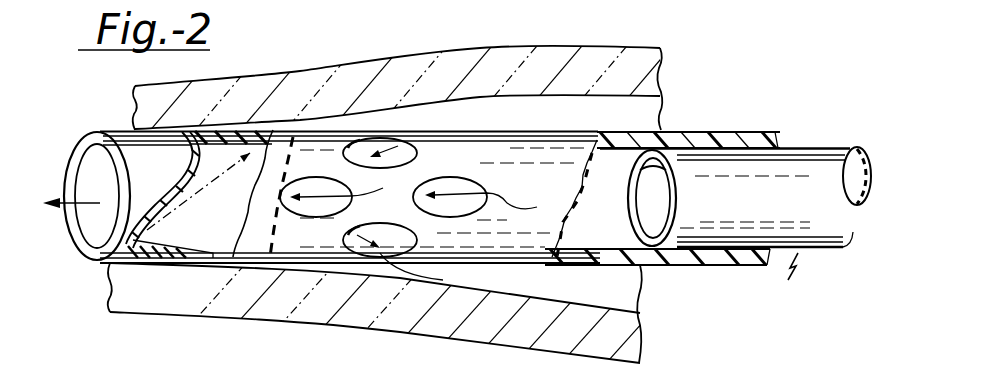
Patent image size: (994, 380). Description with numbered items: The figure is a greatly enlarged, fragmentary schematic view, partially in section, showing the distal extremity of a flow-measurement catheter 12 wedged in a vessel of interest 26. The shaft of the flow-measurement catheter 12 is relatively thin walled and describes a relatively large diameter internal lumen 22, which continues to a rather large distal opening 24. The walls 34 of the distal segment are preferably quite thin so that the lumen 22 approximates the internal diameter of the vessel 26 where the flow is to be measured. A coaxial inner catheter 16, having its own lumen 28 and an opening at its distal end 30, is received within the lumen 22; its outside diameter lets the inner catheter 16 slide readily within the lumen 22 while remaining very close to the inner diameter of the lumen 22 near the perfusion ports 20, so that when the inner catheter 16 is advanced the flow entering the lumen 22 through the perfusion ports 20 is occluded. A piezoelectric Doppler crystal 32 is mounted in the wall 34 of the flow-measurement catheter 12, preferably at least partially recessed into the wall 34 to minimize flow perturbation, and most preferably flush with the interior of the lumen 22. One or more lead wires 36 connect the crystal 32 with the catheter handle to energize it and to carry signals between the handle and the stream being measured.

The flow-measurement catheter 12 is at (722, 127).
The coaxial inner catheter 16 is at (804, 142).
The perfusion ports 20 is at (395, 225).
The internal lumen 22 is at (97, 227).
The distal opening 24 is at (70, 178).
The vessel of interest 26 is at (605, 303).
The lumen 28 is at (850, 173).
The distal end opening 30 is at (654, 210).
The piezoelectric Doppler crystal 32 is at (167, 203).
The wall 34 is at (681, 131).
The lead wires 36 is at (800, 255).